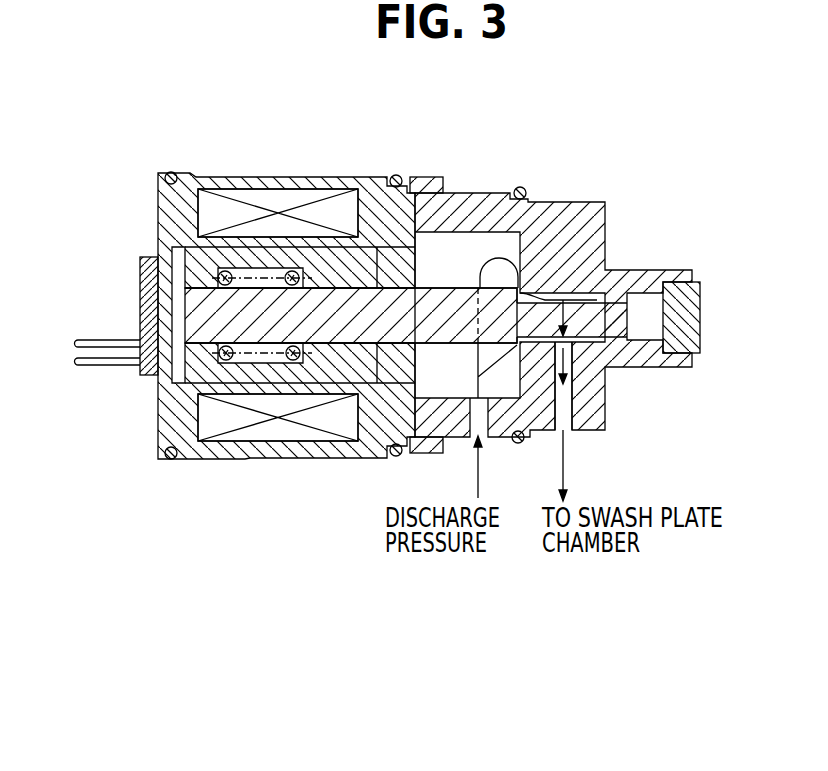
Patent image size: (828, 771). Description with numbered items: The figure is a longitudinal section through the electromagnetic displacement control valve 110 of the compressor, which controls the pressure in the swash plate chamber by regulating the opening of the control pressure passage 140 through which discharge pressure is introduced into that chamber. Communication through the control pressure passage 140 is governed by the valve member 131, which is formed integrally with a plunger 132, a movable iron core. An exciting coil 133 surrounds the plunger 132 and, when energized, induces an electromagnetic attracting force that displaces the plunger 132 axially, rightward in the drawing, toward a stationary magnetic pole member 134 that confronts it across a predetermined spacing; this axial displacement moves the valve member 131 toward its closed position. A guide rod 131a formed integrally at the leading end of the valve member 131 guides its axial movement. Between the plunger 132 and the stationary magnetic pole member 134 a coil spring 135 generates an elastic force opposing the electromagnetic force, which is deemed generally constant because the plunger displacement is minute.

The displacement control valve 110 is at (529, 187).
The valve member 131 is at (460, 287).
The guide rod 131a is at (588, 318).
The plunger 132 is at (202, 260).
The exciting coil 133 is at (297, 195).
The stationary magnetic pole member 134 is at (367, 378).
The coil spring 135 is at (226, 271).
The control pressure passage 140 is at (571, 404).